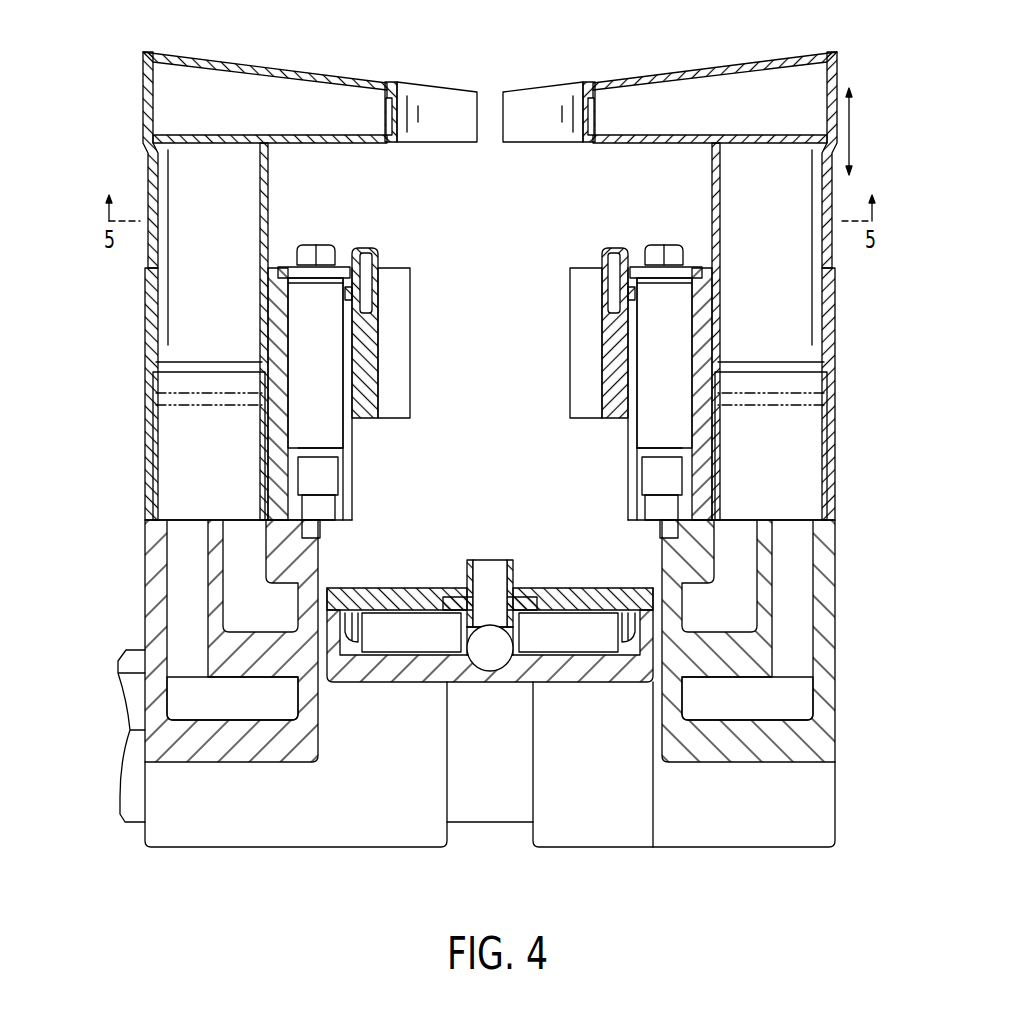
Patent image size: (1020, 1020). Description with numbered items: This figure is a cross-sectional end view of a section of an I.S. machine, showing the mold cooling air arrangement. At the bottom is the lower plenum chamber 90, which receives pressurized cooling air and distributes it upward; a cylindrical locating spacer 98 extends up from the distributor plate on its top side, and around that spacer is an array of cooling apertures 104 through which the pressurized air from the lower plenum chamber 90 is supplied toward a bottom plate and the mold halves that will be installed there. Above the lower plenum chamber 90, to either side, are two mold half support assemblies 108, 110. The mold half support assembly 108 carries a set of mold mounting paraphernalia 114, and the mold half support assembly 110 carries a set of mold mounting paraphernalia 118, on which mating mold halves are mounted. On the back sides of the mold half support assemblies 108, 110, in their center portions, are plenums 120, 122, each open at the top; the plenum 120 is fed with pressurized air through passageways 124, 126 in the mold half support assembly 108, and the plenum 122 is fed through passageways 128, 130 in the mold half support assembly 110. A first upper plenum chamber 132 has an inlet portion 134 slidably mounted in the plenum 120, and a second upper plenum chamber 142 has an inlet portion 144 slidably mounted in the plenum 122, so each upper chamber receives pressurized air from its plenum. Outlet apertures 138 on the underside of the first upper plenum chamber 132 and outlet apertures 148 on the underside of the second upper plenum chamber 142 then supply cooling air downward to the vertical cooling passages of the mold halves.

The lower plenum chamber 90 is at (407, 693).
The locating spacer 98 is at (513, 577).
The array of cooling apertures 104 is at (405, 591).
The mold half support assembly 108 is at (840, 413).
The mold half support assembly 110 is at (140, 413).
The mold mounting paraphernalia 114 is at (602, 307).
The mold mounting paraphernalia 118 is at (378, 307).
The plenum 120 is at (797, 483).
The plenum 122 is at (182, 484).
The passageway 124 is at (742, 603).
The passageway 126 is at (792, 674).
The passageway 128 is at (238, 603).
The passageway 130 is at (188, 674).
The first upper plenum chamber 132 is at (731, 52).
The inlet portion 134 is at (712, 219).
The array of outlet apertures 138 is at (596, 143).
The second upper plenum chamber 142 is at (293, 52).
The inlet portion 144 is at (268, 219).
The array of outlet apertures 148 is at (384, 143).